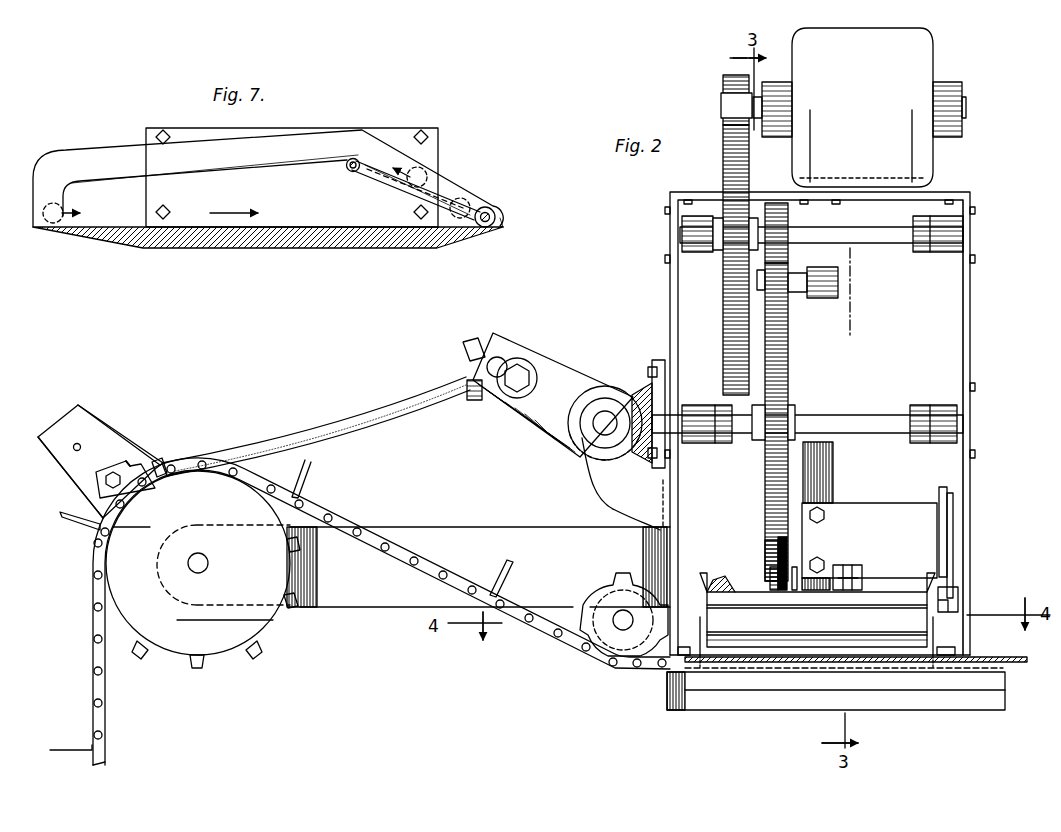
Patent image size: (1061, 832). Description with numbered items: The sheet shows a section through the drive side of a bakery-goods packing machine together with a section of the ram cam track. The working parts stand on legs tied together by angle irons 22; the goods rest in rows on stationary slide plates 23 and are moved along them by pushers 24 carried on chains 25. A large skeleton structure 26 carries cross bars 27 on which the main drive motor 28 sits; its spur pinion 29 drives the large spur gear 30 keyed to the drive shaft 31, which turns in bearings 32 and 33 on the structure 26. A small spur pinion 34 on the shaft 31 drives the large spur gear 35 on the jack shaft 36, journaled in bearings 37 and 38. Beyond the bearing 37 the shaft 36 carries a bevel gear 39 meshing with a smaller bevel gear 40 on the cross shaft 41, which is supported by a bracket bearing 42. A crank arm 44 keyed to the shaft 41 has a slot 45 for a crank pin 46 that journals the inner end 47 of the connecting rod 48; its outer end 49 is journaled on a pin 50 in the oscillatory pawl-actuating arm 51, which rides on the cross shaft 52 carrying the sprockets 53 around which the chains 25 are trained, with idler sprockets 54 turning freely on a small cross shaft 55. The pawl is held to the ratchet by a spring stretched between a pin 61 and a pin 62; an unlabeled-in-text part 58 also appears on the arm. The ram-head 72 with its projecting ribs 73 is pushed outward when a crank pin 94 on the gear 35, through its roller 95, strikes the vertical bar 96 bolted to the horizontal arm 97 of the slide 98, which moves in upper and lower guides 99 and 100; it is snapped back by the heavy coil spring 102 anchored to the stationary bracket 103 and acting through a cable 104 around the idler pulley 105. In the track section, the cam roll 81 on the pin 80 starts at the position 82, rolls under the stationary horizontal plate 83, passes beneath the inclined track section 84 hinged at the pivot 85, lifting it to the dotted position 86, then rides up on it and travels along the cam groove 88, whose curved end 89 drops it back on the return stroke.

In FIG. 2, the angle irons 22 is at (763, 697).
In FIG. 2, the slide plates 23 is at (1013, 663).
In FIG. 2, the pushers 24 is at (702, 627).
In FIG. 2, the chains 25 is at (106, 712).
In FIG. 2, the skeleton structure 26 is at (963, 330).
In FIG. 2, the cross bars 27 is at (670, 195).
In FIG. 2, the main drive motor 28 is at (812, 43).
In FIG. 2, the spur pinion 29 is at (721, 102).
In FIG. 2, the spur gear 30 is at (730, 290).
In FIG. 2, the drive shaft 31 is at (890, 244).
In FIG. 2, the bearing 32 is at (690, 231).
In FIG. 2, the bearing 33 is at (944, 252).
In FIG. 2, the spur pinion 34 is at (790, 220).
In FIG. 2, the spur gear 35 is at (789, 366).
In FIG. 2, the jack shaft 36 is at (853, 420).
In FIG. 2, the bearing 37 is at (702, 430).
In FIG. 2, the bearing 38 is at (940, 432).
In FIG. 2, the bevel gear 39 is at (647, 393).
In FIG. 2, the bevel gear 40 is at (593, 395).
In FIG. 2, the cross shaft 41 is at (605, 425).
In FIG. 2, the bracket bearing 42 is at (614, 485).
In FIG. 2, the crank arm 44 is at (552, 363).
In FIG. 2, the slot 45 is at (497, 362).
In FIG. 2, the crank pin 46 is at (518, 372).
In FIG. 2, the inner end of connecting rod 47 is at (488, 401).
In FIG. 2, the connecting rod 48 is at (375, 408).
In FIG. 2, the outer end of connecting rod 49 is at (147, 468).
In FIG. 2, the pin 50 is at (113, 470).
In FIG. 2, the pawl-actuating arm 51 is at (75, 413).
In FIG. 2, the cross shaft 52 is at (210, 563).
In FIG. 2, the sprockets 53 is at (200, 666).
In FIG. 2, the idler sprockets 54 is at (598, 637).
In FIG. 2, the cross shaft 55 is at (623, 632).
In FIG. 2, the pawl 58 is at (103, 498).
In FIG. 2, the pin 61 is at (73, 448).
In FIG. 2, the pin 62 is at (127, 447).
In FIG. 2, the ram-head 72 is at (817, 619).
In FIG. 2, the ribs 73 is at (890, 640).
In FIG. 7, the pin 80 is at (489, 207).
In FIG. 7, the cam roll 81 is at (503, 218).
In FIG. 7, the innermost cam roll position 82 is at (52, 227).
In FIG. 7, the stationary horizontal plate 83 is at (250, 240).
In FIG. 7, the inclined track section 84 is at (449, 205).
In FIG. 7, the horizontal pivot 85 is at (350, 171).
In FIG. 7, the raised track position 86 is at (436, 192).
In FIG. 7, the cam groove 88 is at (194, 160).
In FIG. 7, the guide 89 is at (55, 180).
In FIG. 2, the guide 89 is at (842, 568).
In FIG. 2, the crank pin 94 is at (795, 282).
In FIG. 2, the roller 95 is at (830, 283).
In FIG. 2, the vertical bar 96 is at (834, 453).
In FIG. 2, the horizontal arm 97 is at (848, 508).
In FIG. 2, the slide 98 is at (947, 510).
In FIG. 2, the upper guide 99 is at (939, 490).
In FIG. 2, the lower guide 100 is at (950, 603).
In FIG. 2, the coil spring 102 is at (718, 592).
In FIG. 2, the stationary bracket 103 is at (708, 580).
In FIG. 2, the cable 104 is at (765, 548).
In FIG. 2, the idler pulley 105 is at (789, 553).